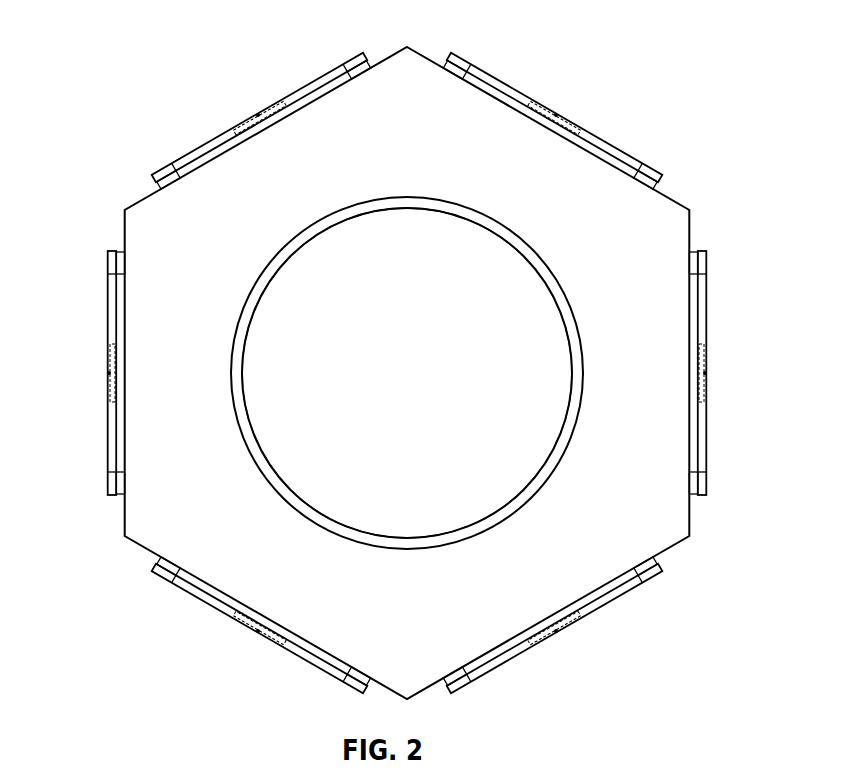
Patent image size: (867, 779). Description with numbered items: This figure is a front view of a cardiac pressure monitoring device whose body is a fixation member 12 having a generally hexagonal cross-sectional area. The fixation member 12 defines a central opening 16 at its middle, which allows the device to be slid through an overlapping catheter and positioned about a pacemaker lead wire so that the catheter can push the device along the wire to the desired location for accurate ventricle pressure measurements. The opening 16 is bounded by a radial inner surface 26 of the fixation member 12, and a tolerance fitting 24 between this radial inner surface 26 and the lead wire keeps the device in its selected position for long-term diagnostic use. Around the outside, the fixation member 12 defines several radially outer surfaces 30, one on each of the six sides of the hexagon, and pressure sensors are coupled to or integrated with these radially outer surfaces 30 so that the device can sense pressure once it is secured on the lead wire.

The fixation member 12 is at (437, 50).
The central opening 16 is at (422, 386).
The tolerance fitting 24 is at (318, 228).
The radial inner surface 26 is at (527, 243).
The radially outer surface 30 is at (140, 202).